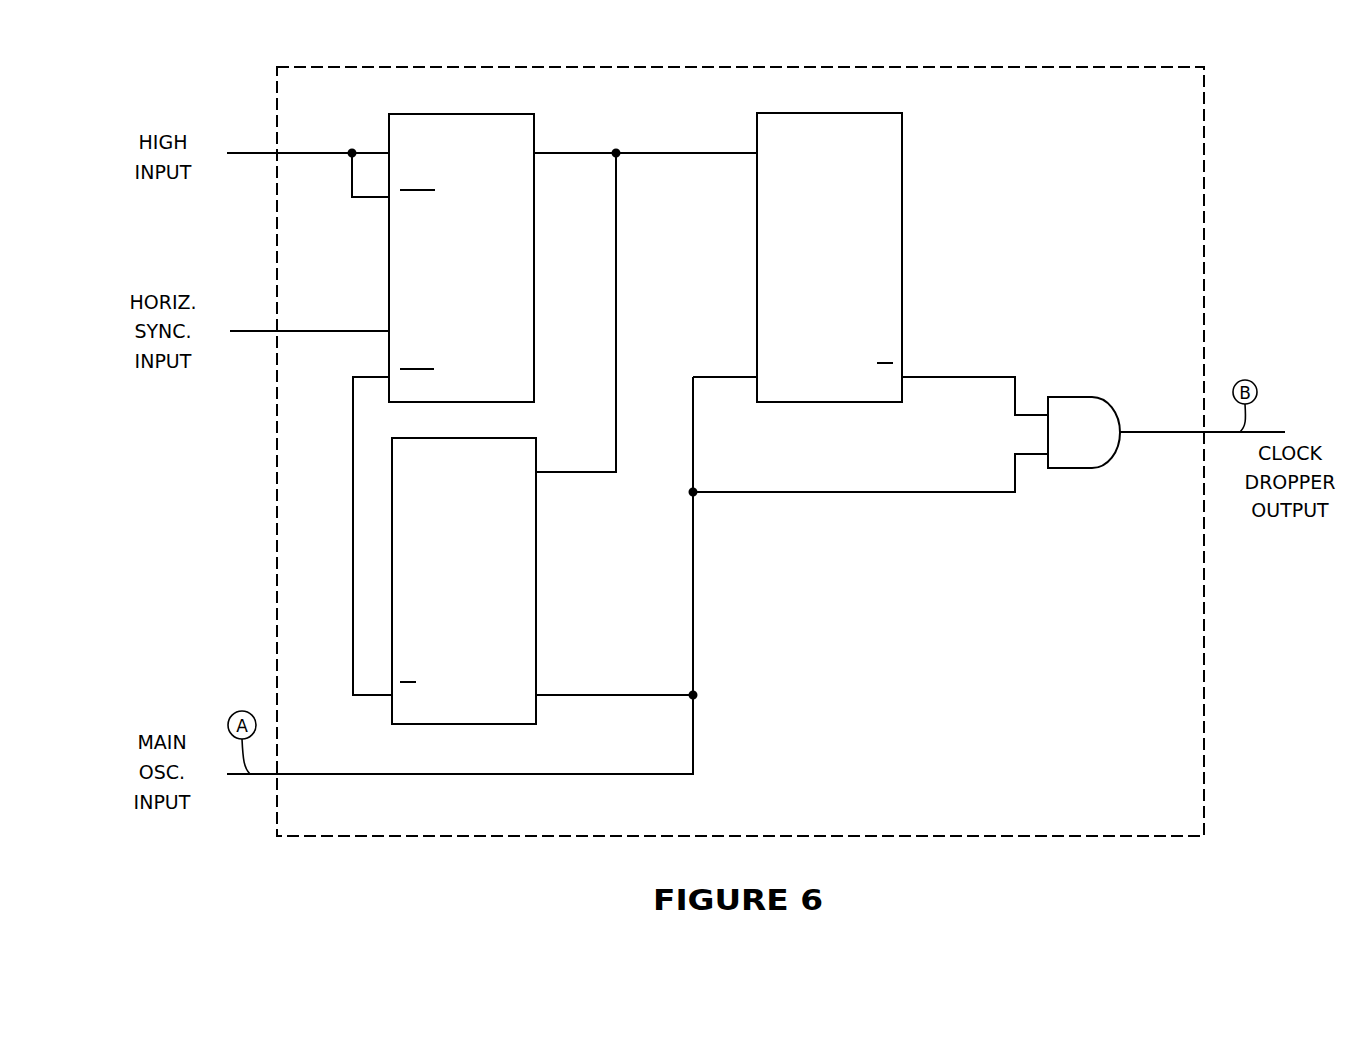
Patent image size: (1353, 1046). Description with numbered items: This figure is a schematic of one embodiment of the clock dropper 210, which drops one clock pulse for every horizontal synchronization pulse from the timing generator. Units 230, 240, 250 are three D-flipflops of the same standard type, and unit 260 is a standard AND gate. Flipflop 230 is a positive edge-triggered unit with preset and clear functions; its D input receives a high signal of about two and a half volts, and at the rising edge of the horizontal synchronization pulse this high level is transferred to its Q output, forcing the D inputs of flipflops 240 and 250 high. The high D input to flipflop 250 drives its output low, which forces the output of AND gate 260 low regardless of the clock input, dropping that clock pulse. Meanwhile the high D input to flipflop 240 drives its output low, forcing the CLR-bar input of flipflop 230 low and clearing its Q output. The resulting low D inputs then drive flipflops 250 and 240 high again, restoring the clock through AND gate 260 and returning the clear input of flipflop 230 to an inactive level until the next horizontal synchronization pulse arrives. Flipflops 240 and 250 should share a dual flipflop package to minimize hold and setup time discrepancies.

The clock dropper 210 is at (1255, 86).
The flipflop 230 is at (485, 121).
The flipflop 240 is at (508, 440).
The flipflop 250 is at (859, 120).
The AND gate 260 is at (1060, 399).